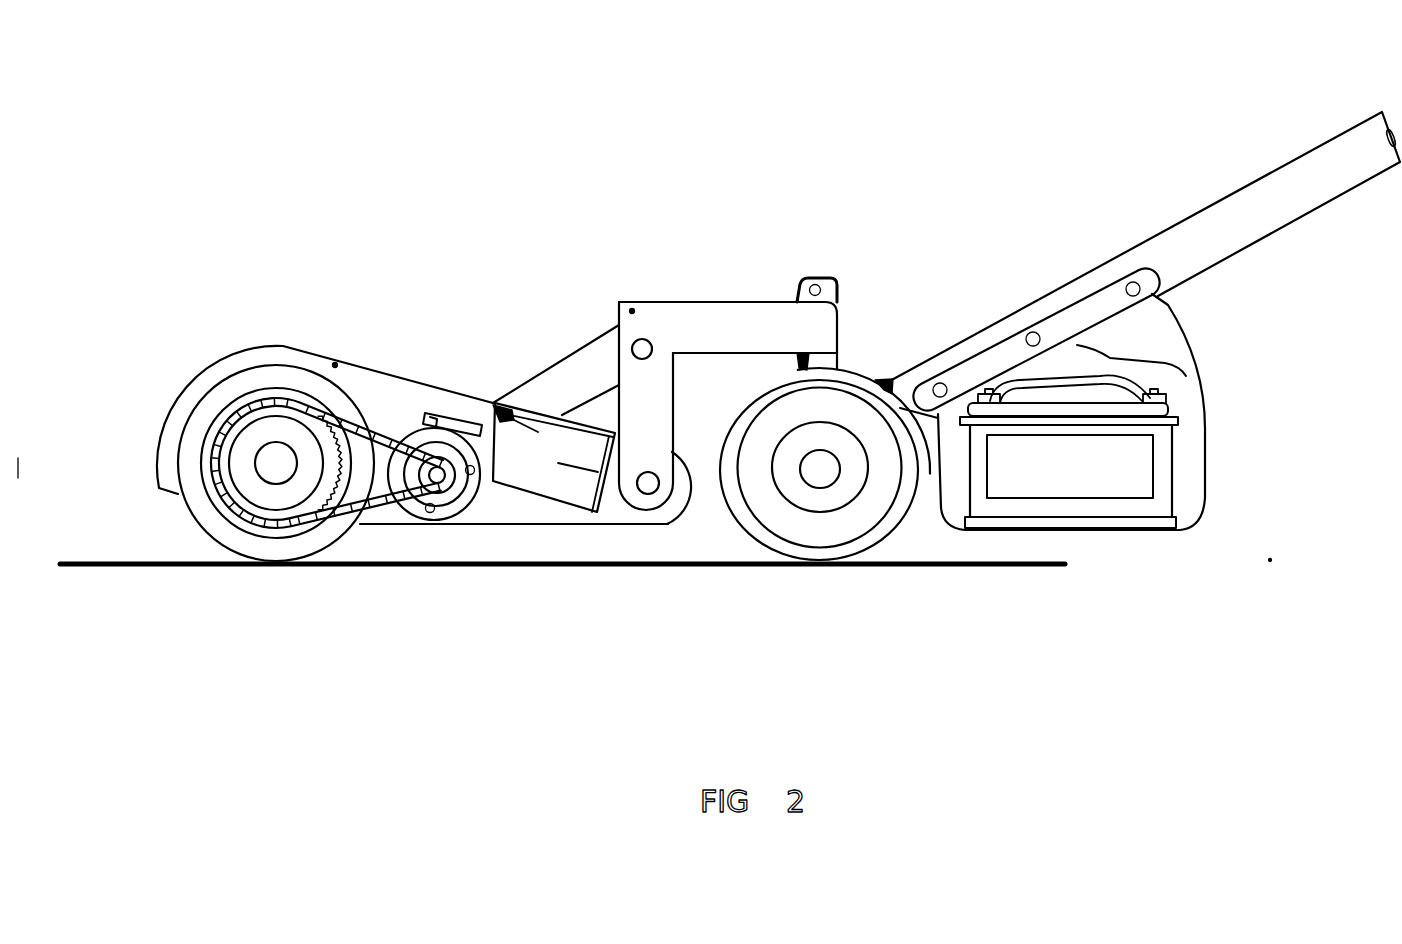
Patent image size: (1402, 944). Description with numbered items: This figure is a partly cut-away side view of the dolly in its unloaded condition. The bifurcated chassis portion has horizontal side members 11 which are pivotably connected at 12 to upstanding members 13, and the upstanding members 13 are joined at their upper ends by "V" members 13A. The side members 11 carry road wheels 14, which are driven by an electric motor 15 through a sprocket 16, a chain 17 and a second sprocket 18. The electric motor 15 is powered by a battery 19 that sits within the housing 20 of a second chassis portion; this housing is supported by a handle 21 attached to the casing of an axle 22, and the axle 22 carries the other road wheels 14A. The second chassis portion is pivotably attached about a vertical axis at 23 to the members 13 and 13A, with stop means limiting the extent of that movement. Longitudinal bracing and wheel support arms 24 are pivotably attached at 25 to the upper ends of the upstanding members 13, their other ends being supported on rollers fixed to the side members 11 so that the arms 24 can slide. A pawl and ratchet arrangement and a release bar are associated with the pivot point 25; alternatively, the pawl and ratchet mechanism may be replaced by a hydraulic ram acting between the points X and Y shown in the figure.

The horizontal side members 11 is at (381, 392).
The pivotable connection 12 is at (650, 490).
The upstanding members 13 is at (652, 410).
The V members 13A is at (713, 302).
The road wheels 14 is at (283, 538).
The road wheels 14A is at (827, 532).
The electric motor 15 is at (522, 470).
The sprocket 16 is at (412, 503).
The chain 17 is at (387, 503).
The sprocket 18 is at (238, 495).
The battery 19 is at (1124, 463).
The housing 20 is at (1153, 336).
The handle 21 is at (1185, 228).
The axle 22 is at (823, 470).
The pivotable attachment 23 is at (800, 288).
The longitudinal bracing/wheel support arms 24 is at (555, 378).
The pivotable attachment point 25 is at (634, 342).
The point X is at (644, 278).
The point Y is at (336, 350).